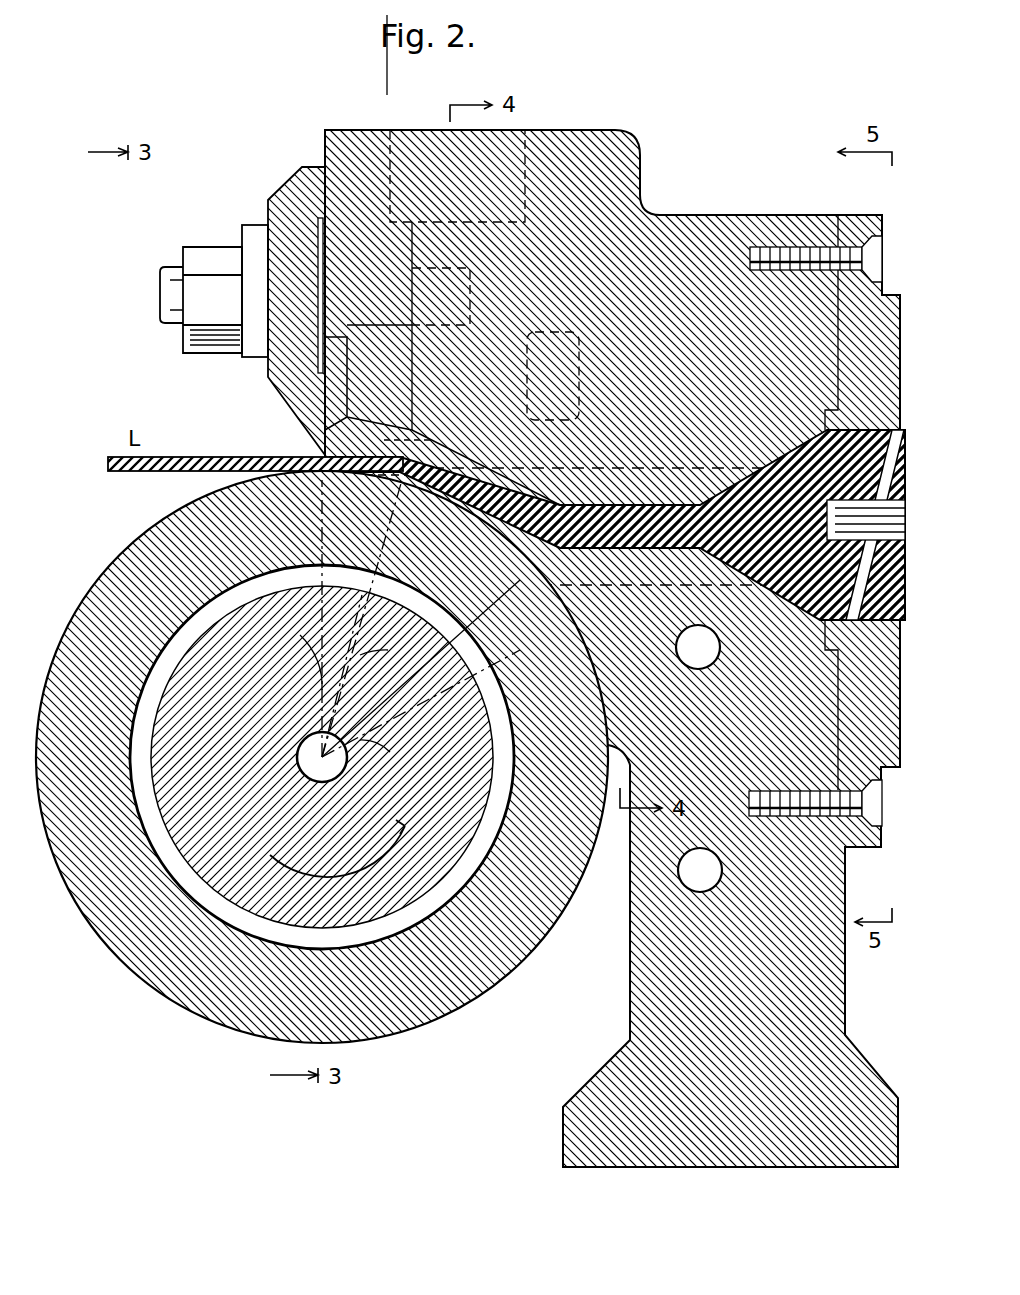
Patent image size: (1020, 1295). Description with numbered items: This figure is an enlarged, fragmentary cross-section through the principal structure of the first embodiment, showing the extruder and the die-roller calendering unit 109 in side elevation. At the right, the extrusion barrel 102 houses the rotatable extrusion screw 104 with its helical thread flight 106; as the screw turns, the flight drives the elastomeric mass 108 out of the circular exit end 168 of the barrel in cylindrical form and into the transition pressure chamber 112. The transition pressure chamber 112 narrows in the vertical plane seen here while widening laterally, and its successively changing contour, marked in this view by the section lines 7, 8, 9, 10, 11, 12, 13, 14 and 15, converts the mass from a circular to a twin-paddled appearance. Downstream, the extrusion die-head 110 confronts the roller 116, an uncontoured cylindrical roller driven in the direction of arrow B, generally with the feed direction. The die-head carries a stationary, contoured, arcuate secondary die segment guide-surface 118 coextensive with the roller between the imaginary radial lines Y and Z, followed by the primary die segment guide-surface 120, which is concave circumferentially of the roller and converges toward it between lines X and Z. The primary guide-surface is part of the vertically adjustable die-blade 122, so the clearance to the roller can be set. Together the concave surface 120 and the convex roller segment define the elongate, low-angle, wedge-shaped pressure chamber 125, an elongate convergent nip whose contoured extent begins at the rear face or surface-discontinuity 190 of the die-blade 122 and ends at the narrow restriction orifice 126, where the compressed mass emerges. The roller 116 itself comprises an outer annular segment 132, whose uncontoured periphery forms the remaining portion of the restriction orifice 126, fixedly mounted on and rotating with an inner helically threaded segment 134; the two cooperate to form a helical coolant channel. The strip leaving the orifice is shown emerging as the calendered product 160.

The clamp pressure zone 7 is at (822, 397).
The clamp pressure zone 8 is at (770, 423).
The clamp pressure zone 9 is at (722, 445).
The clamp pressure zone 10 is at (690, 457).
The clamp pressure zone 11 is at (662, 467).
The clamp pressure zone 12 is at (632, 480).
The clamp pressure zone 13 is at (608, 491).
The clamp pressure zone 14 is at (580, 475).
The clamp pressure zone 15 is at (508, 457).
The extrusion barrel 102 is at (819, 737).
The extrusion screw 104 is at (832, 498).
The helical thread flight 106 is at (810, 600).
The elastomeric mass 108 is at (800, 475).
The die-roller calendering unit 109 is at (618, 124).
The extrusion die-head 110 is at (630, 132).
The transition pressure chamber 112 is at (748, 492).
The roller 116 is at (510, 647).
The secondary die segment guide-surface 118 is at (456, 450).
The primary die segment guide-surface 120 is at (380, 450).
The die-blade 122 is at (335, 350).
The wedge-shaped pressure chamber 125 is at (377, 517).
The narrow restriction orifice 126 is at (312, 478).
The outer annular segment 132 is at (150, 980).
The inner helically threaded segment 134 is at (200, 868).
The strip material 160 is at (216, 457).
The exit end 168 is at (819, 329).
The rear face or surface-discontinuity 190 is at (430, 436).